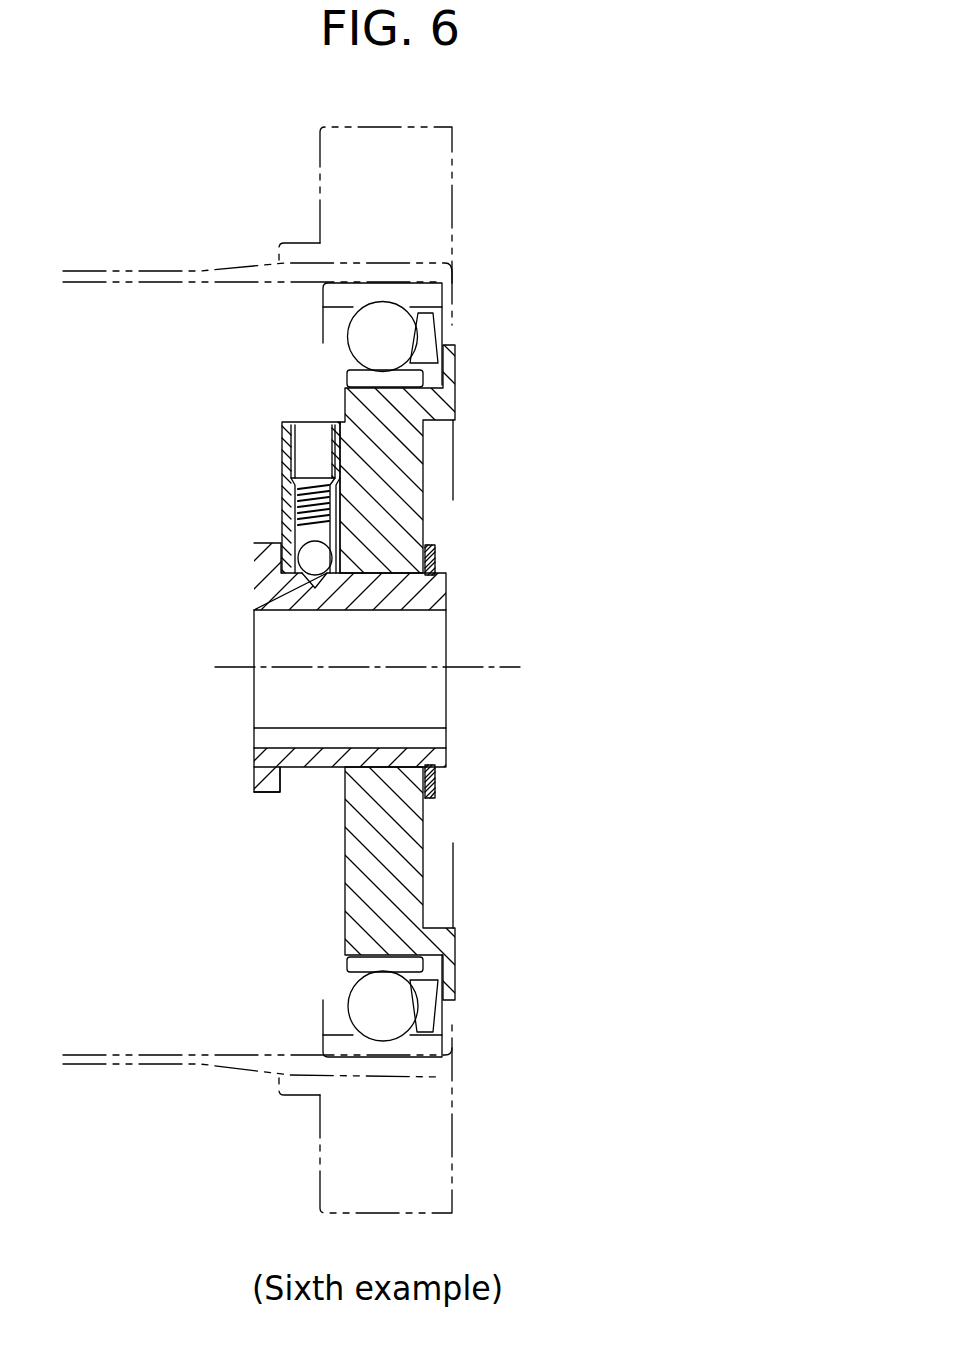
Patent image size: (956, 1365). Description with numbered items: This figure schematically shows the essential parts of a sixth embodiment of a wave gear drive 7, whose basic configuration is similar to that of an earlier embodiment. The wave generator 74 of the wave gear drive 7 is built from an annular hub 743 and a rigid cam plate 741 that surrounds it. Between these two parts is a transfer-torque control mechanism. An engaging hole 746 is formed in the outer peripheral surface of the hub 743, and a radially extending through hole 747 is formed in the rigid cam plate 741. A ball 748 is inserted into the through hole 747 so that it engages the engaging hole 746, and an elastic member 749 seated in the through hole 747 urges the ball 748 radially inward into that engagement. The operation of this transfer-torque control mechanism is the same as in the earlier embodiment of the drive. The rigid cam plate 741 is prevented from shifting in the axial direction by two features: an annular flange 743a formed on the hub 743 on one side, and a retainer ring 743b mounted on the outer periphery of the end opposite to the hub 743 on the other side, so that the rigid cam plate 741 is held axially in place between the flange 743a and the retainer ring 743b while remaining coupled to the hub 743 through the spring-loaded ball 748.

The wave gear drive 7 is at (590, 218).
The wave generator 74 is at (527, 430).
The rigid cam plate 741 is at (400, 528).
The hub 743 is at (425, 597).
The annular flange 743a is at (263, 785).
The retainer ring 743b is at (435, 788).
The engaging hole 746 is at (306, 585).
The through hole 747 is at (296, 438).
The ball 748 is at (303, 578).
The elastic member 749 is at (283, 505).